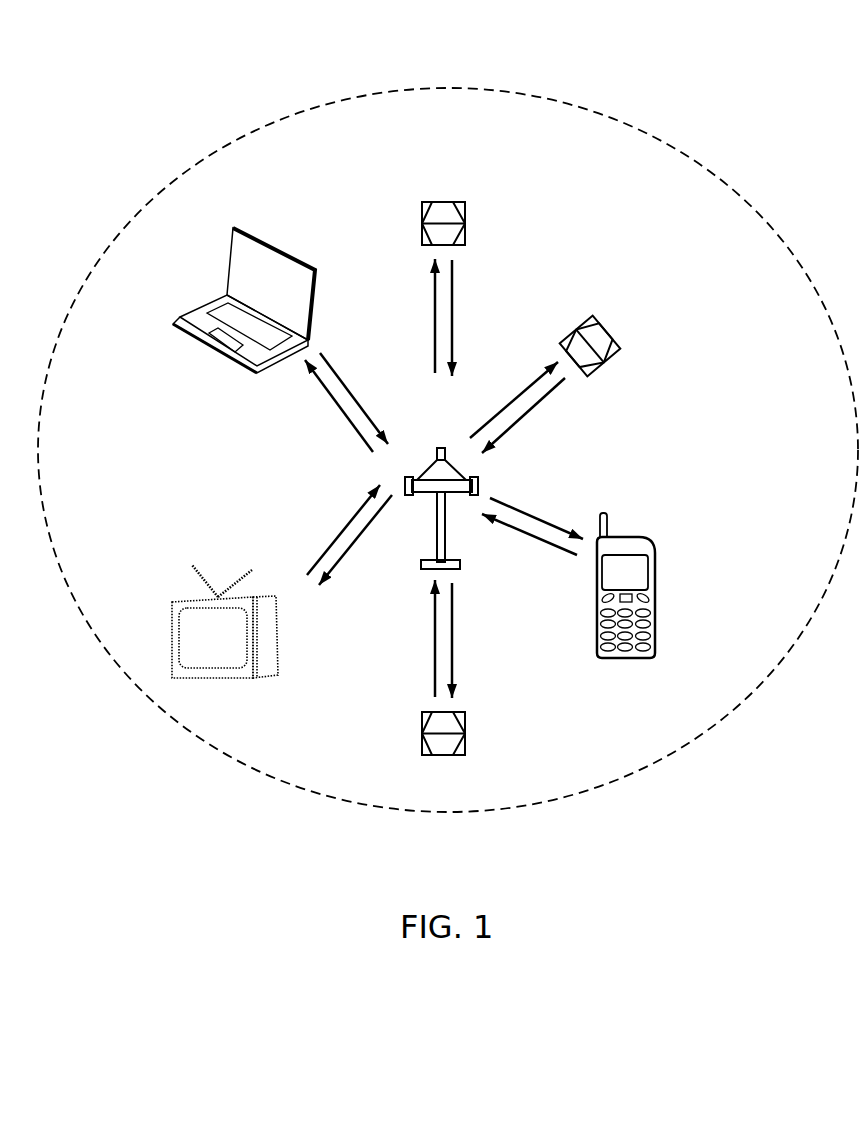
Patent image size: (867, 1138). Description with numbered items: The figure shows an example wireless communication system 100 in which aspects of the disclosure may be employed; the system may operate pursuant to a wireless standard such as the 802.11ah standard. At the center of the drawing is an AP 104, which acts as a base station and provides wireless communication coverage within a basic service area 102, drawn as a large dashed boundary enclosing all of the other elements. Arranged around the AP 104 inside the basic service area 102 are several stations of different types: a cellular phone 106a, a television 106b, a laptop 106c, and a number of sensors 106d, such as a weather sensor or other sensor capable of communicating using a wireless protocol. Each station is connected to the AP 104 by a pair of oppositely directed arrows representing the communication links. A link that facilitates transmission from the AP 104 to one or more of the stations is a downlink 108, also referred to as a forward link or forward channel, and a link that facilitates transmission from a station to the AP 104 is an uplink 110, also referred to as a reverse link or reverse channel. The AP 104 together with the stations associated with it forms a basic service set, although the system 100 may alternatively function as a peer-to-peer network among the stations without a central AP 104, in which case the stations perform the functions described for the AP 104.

The wireless communication system 100 is at (752, 36).
The basic service area 102 is at (795, 255).
The AP 104 is at (440, 445).
The cellular phone 106a is at (630, 535).
The television 106b is at (272, 593).
The laptop 106c is at (243, 230).
The sensors 106d is at (467, 222).
The downlink 108 is at (525, 500).
The uplink 110 is at (482, 537).